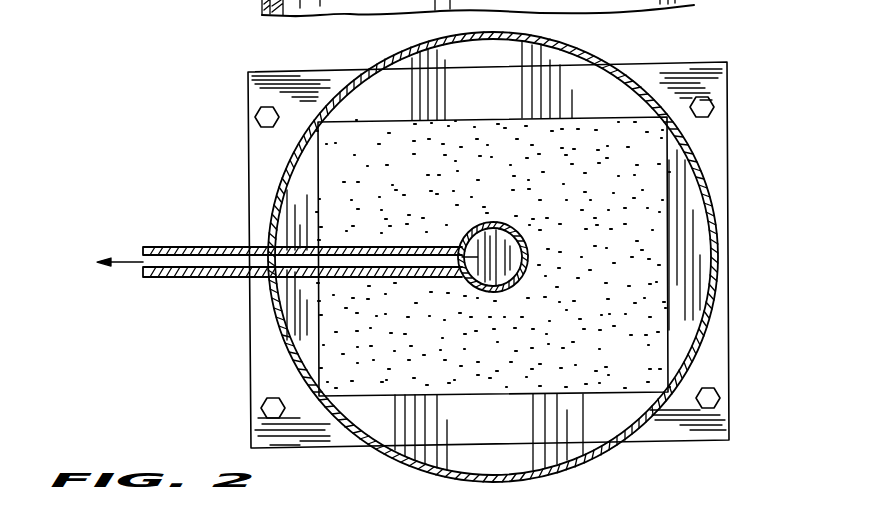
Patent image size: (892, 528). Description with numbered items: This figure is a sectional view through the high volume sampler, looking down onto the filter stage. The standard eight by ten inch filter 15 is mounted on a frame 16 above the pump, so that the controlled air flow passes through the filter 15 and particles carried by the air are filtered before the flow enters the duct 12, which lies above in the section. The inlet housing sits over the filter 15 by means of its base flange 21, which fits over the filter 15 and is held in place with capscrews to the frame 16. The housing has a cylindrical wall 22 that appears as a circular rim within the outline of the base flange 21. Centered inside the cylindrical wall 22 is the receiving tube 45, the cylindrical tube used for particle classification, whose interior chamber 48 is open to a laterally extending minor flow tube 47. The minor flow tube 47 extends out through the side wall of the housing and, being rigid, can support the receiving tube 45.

The duct 12 is at (745, 3).
The filter 15 is at (653, 240).
The frame 16 is at (716, 107).
The base flange 21 is at (248, 155).
The cylindrical wall 22 is at (697, 158).
The receiving tube 45 is at (528, 268).
The minor flow tube 47 is at (213, 247).
The interior chamber 48 is at (483, 272).